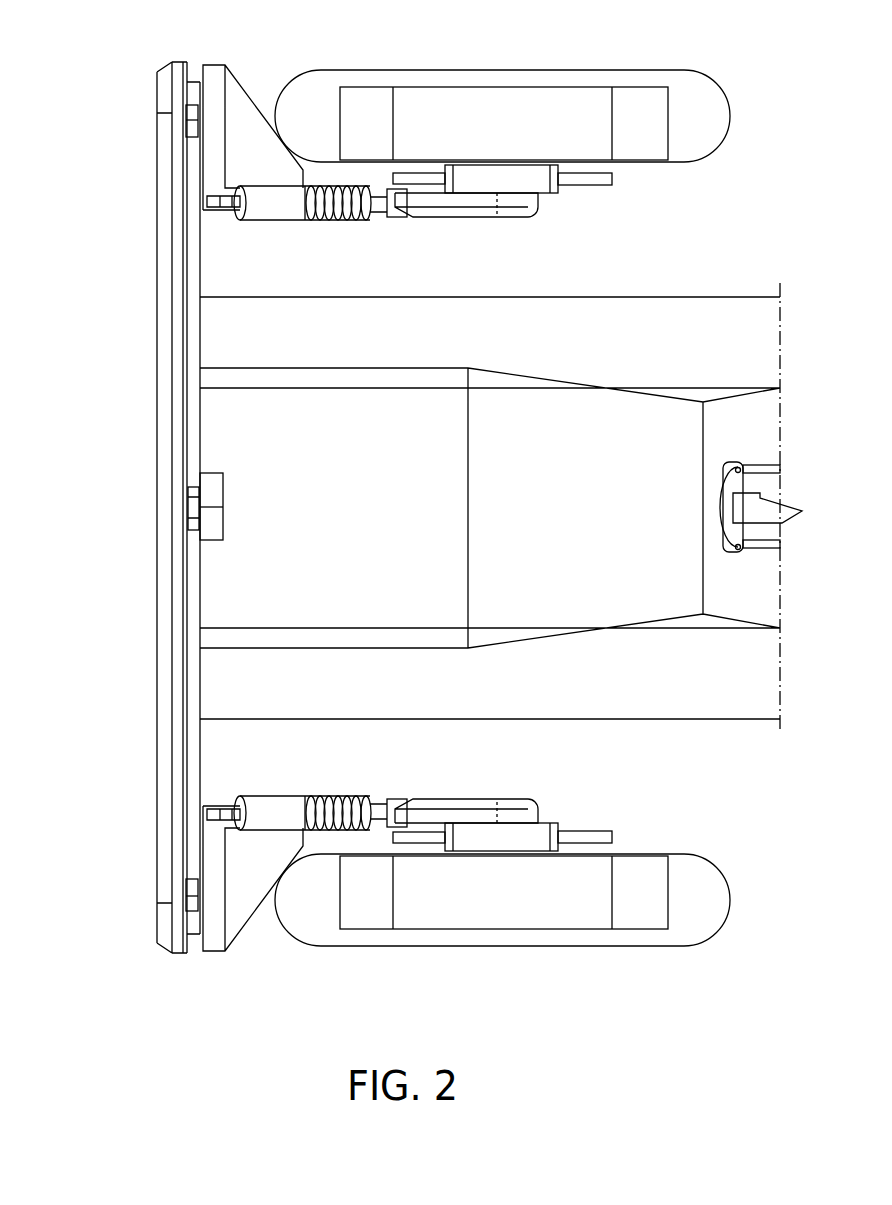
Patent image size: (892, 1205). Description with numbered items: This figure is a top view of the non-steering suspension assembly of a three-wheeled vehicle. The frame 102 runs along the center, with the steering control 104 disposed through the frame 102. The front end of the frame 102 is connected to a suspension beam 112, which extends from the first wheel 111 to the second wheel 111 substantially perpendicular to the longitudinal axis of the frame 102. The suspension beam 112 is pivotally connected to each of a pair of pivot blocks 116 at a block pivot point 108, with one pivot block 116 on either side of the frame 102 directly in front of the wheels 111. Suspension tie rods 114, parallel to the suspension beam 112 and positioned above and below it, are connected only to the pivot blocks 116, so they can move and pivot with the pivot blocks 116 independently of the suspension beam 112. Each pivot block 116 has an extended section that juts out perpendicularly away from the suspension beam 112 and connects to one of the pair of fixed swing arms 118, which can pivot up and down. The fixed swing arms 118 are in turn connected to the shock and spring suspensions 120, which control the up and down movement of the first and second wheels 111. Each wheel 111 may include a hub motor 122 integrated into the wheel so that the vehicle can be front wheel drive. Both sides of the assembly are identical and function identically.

The frame 102 is at (722, 323).
The steering control 104 is at (212, 497).
The block pivot point 108 is at (195, 84).
The first and second wheels 111 is at (668, 80).
The suspension beam 112 is at (160, 345).
The suspension tie rods 114 is at (193, 782).
The pivot blocks 116 is at (253, 100).
The fixed swing arms 118 is at (457, 218).
The shock and spring suspensions 120 is at (268, 222).
The hub motor 122 is at (545, 196).